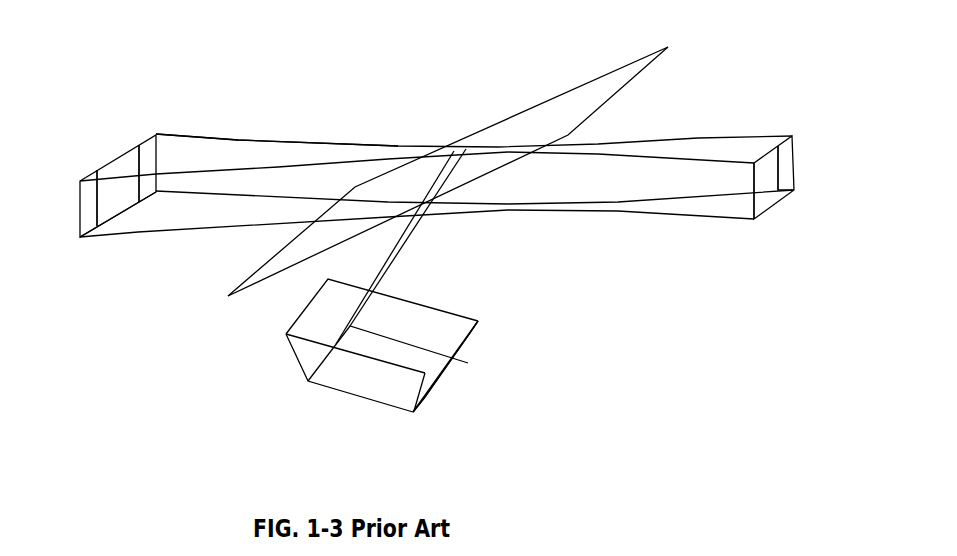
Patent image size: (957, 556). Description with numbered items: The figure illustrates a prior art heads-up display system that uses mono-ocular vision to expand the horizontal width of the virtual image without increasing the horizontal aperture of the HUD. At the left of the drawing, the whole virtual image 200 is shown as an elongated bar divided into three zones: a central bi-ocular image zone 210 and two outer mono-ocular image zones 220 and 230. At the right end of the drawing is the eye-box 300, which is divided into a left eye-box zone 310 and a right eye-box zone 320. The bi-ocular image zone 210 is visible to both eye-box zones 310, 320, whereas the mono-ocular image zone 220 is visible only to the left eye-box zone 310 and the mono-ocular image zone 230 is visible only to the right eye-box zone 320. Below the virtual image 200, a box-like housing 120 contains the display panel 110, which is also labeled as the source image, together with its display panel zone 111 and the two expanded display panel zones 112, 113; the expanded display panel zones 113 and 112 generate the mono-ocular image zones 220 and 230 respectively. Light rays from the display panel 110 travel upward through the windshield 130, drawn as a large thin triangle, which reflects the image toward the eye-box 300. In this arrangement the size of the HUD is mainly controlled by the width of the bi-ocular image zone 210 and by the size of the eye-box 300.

The display panel 110 is at (447, 350).
The display panel zone 111 is at (447, 387).
The expanded display panel zone 112 is at (477, 346).
The expanded display panel zone 113 is at (425, 405).
The housing 120 is at (298, 358).
The windshield 130 is at (597, 92).
The virtual image 200 is at (94, 160).
The bi-ocular image zone 210 is at (127, 168).
The mono-ocular image zone 220 is at (172, 137).
The mono-ocular image zone 230 is at (82, 238).
The eye-box 300 is at (781, 134).
The left eye-box zone 310 is at (769, 220).
The right eye-box zone 320 is at (794, 198).